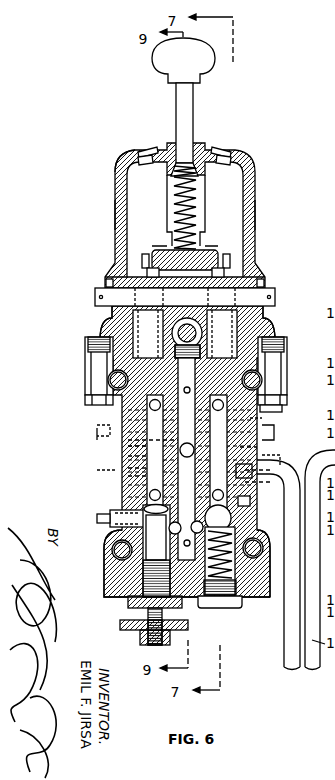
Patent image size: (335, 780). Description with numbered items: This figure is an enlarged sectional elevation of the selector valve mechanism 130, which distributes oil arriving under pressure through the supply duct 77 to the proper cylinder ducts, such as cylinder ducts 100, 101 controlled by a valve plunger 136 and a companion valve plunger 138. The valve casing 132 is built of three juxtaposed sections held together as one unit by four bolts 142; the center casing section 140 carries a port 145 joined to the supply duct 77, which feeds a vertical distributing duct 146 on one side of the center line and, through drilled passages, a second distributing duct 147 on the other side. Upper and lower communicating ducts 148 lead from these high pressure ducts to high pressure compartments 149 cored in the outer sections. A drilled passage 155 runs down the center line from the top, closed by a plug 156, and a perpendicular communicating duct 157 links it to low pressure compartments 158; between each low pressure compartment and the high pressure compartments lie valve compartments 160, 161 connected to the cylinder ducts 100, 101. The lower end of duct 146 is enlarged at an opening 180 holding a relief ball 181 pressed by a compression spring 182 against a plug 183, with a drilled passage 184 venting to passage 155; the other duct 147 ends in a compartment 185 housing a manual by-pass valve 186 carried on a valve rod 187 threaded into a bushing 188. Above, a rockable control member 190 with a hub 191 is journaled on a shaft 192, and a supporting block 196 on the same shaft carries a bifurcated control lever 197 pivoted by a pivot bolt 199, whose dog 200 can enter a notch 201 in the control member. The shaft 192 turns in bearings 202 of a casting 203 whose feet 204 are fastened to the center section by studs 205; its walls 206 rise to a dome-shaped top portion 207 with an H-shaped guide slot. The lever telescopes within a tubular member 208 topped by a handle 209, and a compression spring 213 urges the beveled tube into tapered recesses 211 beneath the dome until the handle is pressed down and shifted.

The supply duct 77 is at (287, 632).
The cylinder duct 100 is at (125, 434).
The cylinder duct 101 is at (283, 462).
The selector valve mechanism 130 is at (76, 338).
The valve casing 132 is at (245, 596).
The valve plunger 136 is at (242, 338).
The valve plunger 138 is at (148, 338).
The center casing section 140 is at (127, 590).
The bolt 142 is at (102, 380).
The port 145 is at (252, 464).
The distributing duct 146 is at (250, 447).
The distributing duct 147 is at (140, 441).
The communicating duct 148 is at (128, 410).
The high pressure compartment 149 is at (281, 385).
The drilled passage 155 is at (140, 468).
The plug 156 is at (176, 356).
The communicating duct 157 is at (140, 446).
The low pressure compartment 158 is at (140, 456).
The valve compartment 160 is at (125, 416).
The valve compartment 161 is at (140, 476).
The enlarged opening 180 is at (245, 531).
The ball 181 is at (200, 519).
The compression spring 182 is at (238, 580).
The plug 183 is at (231, 606).
The drilled passage 184 is at (148, 540).
The compartment 185 is at (145, 528).
The valve 186 is at (118, 519).
The valve rod 187 is at (128, 632).
The bushing 188 is at (145, 604).
The rockable control member 190 is at (156, 272).
The hub 191 is at (112, 279).
The shaft 192 is at (275, 297).
The supporting block 196 is at (224, 346).
The bifurcated control lever 197 is at (203, 250).
The pivot bolt 199 is at (172, 343).
The dog 200 is at (160, 257).
The notch 201 is at (150, 271).
The bearing 202 is at (105, 289).
The casting 203 is at (257, 188).
The foot 204 is at (90, 343).
The stud 205 is at (100, 393).
The wall 206 is at (118, 186).
The dome-shaped top portion 207 is at (133, 152).
The tubular member 208 is at (199, 214).
The handle 209 is at (187, 100).
The tapered recess 211 is at (180, 140).
The compression spring 213 is at (194, 181).